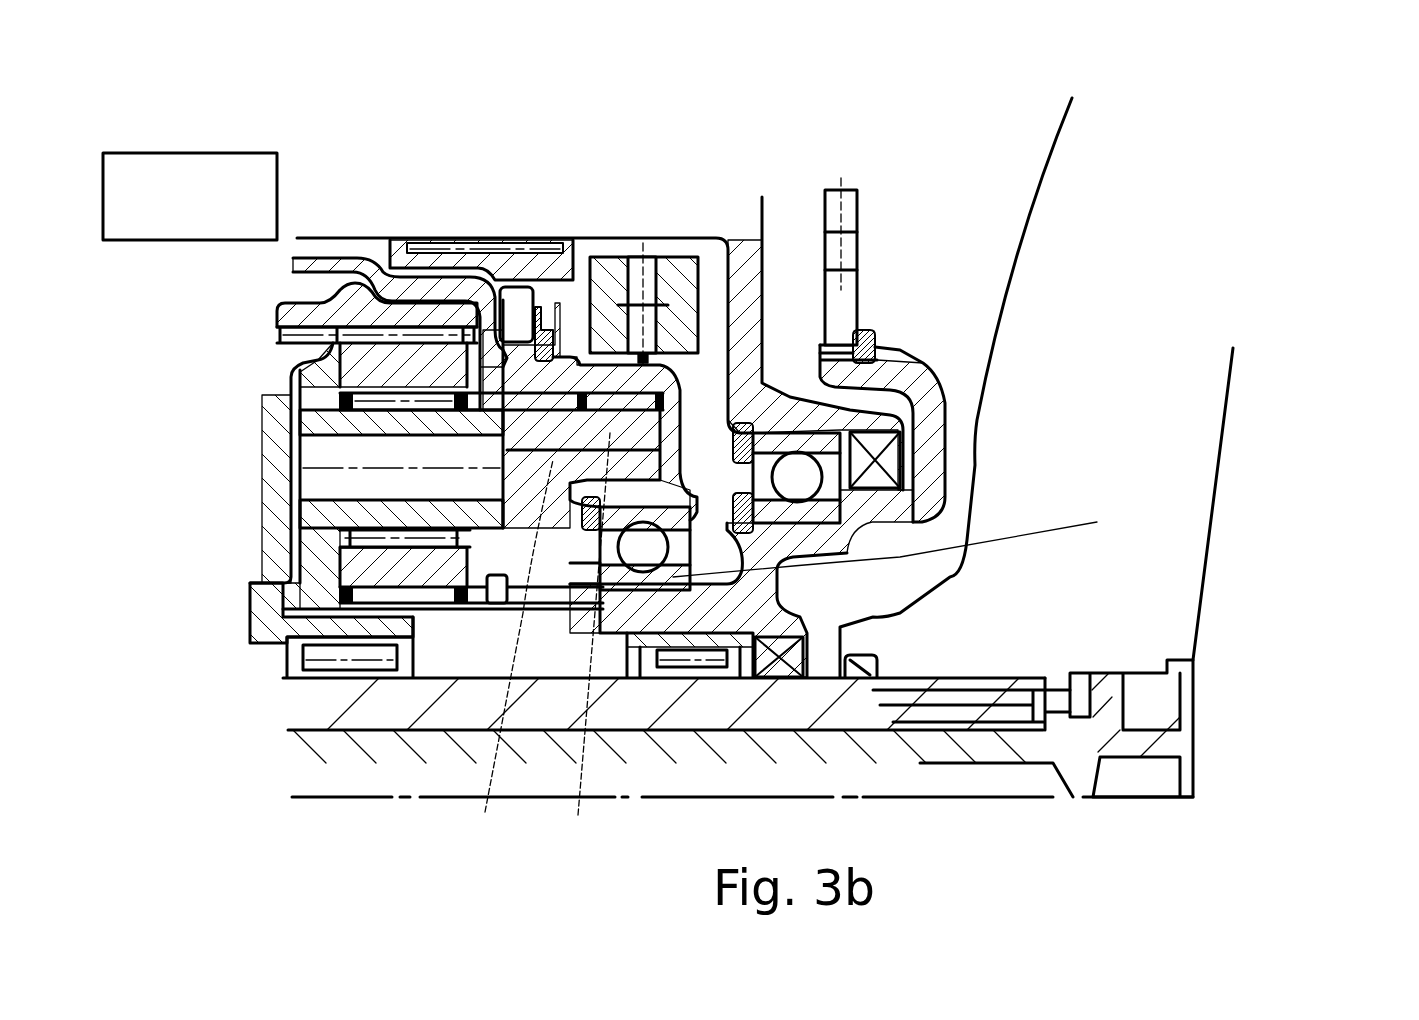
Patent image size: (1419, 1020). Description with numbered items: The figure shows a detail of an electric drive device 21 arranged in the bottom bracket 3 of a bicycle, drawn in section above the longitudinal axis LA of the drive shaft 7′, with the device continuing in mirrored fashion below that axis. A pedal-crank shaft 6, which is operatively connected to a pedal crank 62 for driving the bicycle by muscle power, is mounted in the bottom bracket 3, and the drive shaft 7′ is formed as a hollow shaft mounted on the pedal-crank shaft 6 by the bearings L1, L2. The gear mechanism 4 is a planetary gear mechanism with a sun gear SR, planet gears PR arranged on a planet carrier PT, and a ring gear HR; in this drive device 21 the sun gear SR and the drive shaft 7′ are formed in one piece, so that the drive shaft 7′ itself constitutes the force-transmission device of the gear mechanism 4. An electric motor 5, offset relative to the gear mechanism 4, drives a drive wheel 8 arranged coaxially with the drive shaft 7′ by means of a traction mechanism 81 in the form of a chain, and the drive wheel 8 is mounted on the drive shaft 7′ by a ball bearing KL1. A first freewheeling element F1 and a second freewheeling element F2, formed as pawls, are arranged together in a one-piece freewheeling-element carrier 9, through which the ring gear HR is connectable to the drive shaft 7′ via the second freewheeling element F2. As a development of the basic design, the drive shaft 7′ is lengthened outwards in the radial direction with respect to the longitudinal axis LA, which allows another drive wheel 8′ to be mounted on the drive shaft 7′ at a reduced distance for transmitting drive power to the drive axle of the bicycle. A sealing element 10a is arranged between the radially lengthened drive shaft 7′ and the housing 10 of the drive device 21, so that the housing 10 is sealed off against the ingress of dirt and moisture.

The bottom bracket 3 is at (1163, 160).
The gear mechanism 4 is at (176, 405).
The electric motor 5 is at (190, 196).
The pedal-crank shaft 6 is at (853, 717).
The drive shaft 7′ is at (940, 403).
The drive wheel 8 is at (635, 240).
The drive wheel 8′ is at (843, 188).
The traction mechanism 81 is at (690, 240).
The freewheeling-element carrier 9 is at (683, 410).
The housing 10 is at (762, 197).
The sealing element 10a is at (870, 440).
The electric drive device 21 is at (1268, 558).
The pedal crank 62 is at (1097, 248).
The ring gear HR is at (357, 312).
The planet carrier PT is at (317, 540).
The planet gear PR is at (395, 568).
The sun gear SR is at (373, 627).
The bearing L1 is at (295, 677).
The bearing L2 is at (720, 677).
The first freewheeling element F1 is at (584, 642).
The second freewheeling element F2 is at (509, 652).
The ball bearing KL1 is at (913, 541).
The longitudinal axis LA is at (1137, 800).